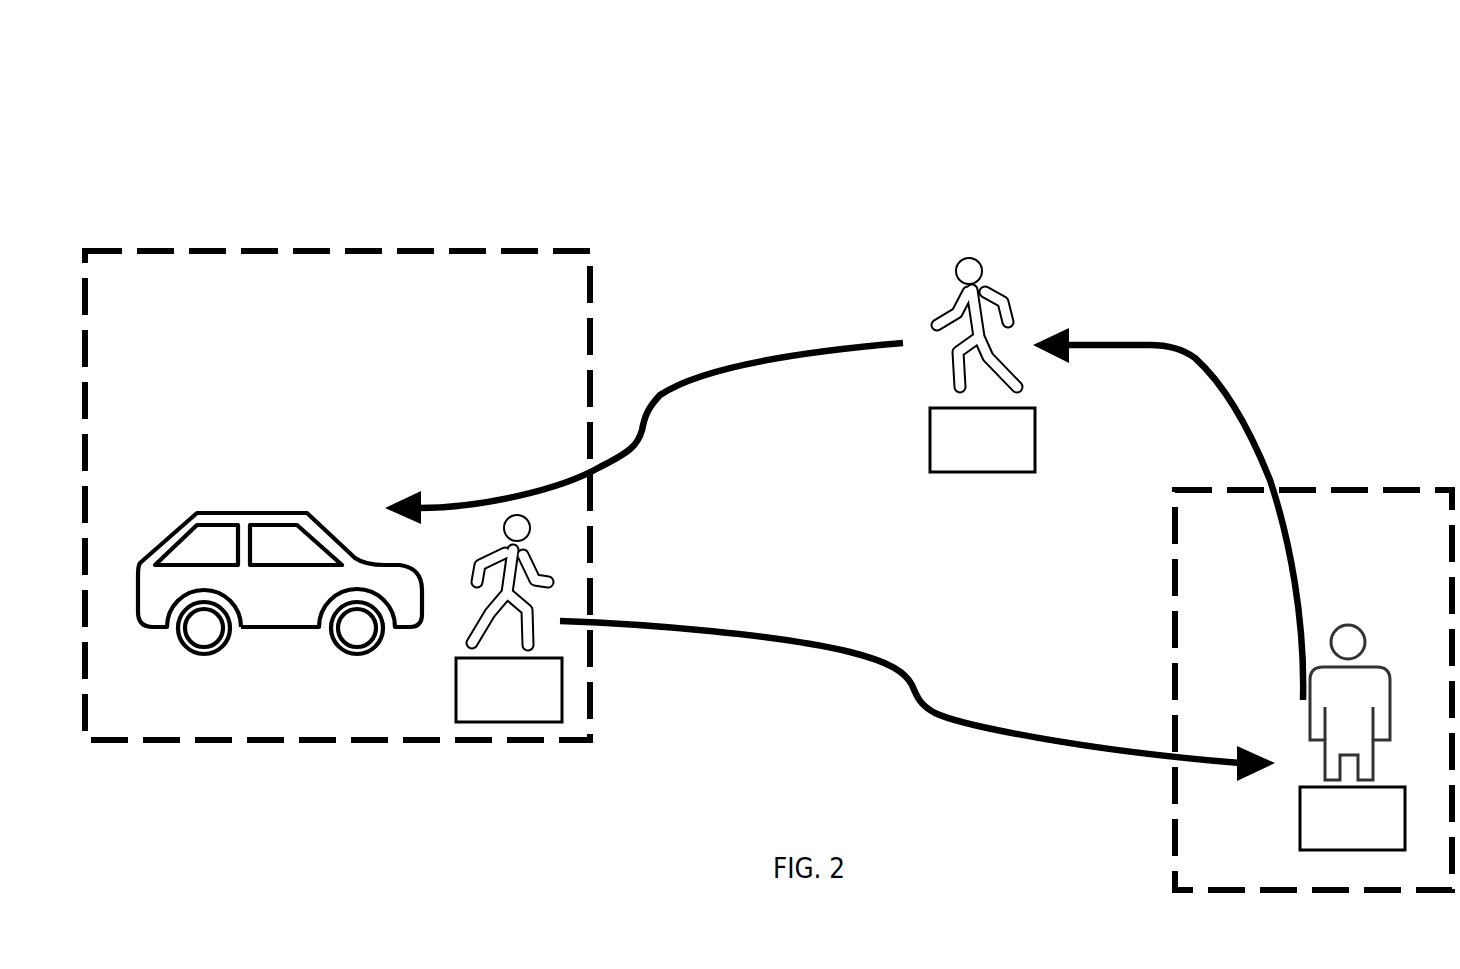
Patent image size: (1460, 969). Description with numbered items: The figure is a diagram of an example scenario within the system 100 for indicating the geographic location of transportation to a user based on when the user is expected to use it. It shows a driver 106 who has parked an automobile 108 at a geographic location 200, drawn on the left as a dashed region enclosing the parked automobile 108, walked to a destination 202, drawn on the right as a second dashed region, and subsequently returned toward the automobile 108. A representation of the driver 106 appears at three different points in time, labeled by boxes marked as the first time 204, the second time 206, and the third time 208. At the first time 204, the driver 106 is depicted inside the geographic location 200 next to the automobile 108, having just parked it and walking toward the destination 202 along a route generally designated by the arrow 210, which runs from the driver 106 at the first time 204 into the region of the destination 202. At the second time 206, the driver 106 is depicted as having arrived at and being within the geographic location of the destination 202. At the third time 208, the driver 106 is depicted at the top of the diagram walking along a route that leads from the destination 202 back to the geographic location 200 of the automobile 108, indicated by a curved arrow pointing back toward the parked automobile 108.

The system 100 is at (366, 101).
The driver 106 is at (550, 574).
The automobile 108 is at (183, 513).
The geographic location 200 is at (593, 268).
The destination 202 is at (1333, 488).
The TIME 1 204 is at (509, 690).
The TIME 2 206 is at (1352, 818).
The TIME 3 208 is at (982, 440).
The arrow 210 is at (917, 690).